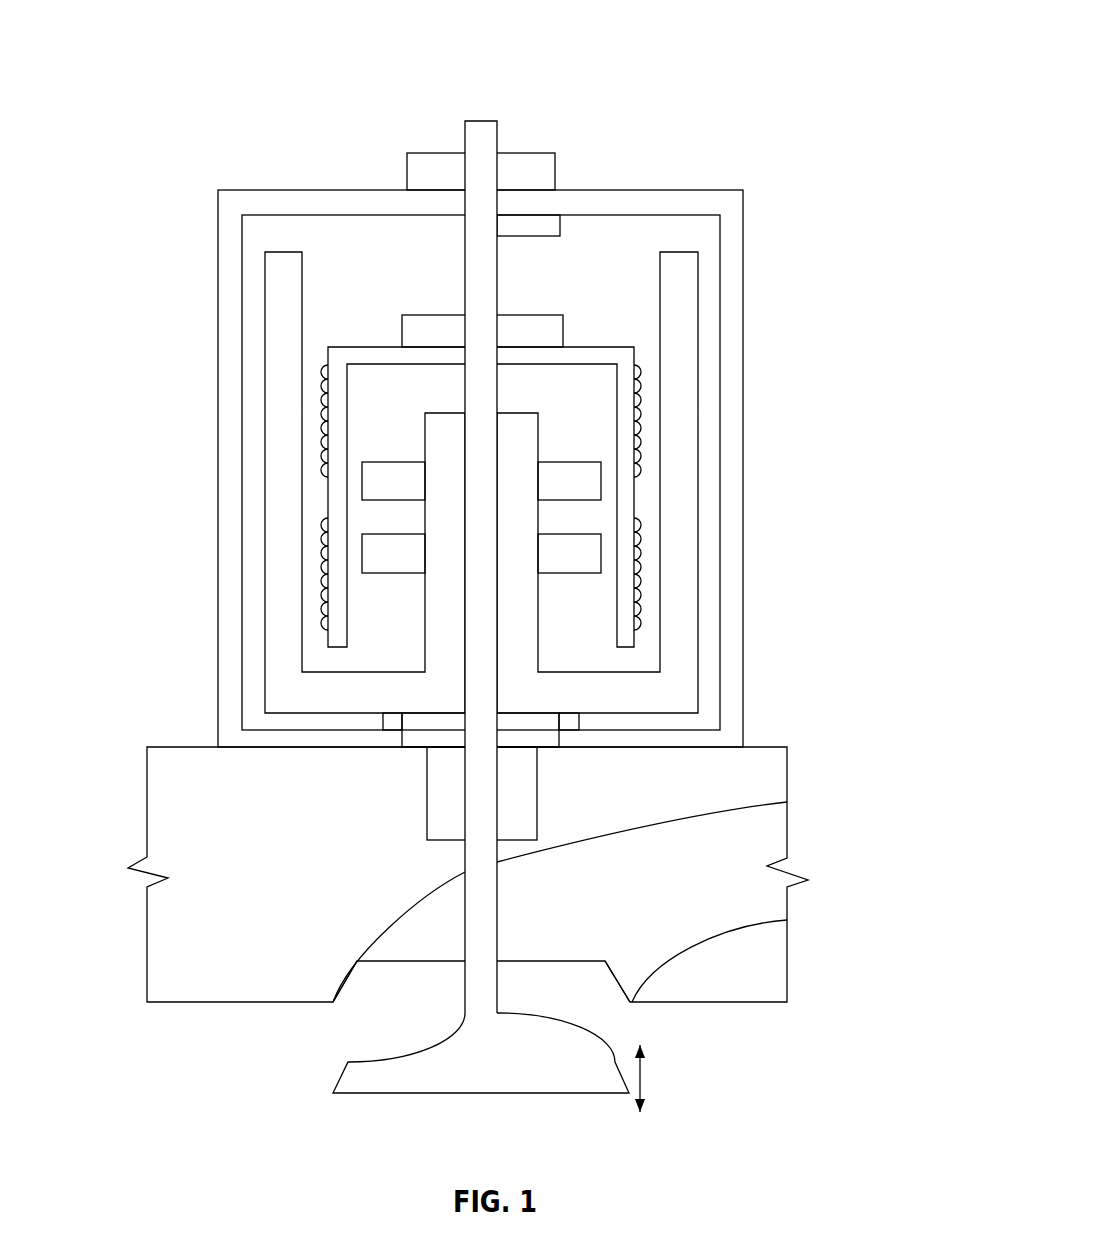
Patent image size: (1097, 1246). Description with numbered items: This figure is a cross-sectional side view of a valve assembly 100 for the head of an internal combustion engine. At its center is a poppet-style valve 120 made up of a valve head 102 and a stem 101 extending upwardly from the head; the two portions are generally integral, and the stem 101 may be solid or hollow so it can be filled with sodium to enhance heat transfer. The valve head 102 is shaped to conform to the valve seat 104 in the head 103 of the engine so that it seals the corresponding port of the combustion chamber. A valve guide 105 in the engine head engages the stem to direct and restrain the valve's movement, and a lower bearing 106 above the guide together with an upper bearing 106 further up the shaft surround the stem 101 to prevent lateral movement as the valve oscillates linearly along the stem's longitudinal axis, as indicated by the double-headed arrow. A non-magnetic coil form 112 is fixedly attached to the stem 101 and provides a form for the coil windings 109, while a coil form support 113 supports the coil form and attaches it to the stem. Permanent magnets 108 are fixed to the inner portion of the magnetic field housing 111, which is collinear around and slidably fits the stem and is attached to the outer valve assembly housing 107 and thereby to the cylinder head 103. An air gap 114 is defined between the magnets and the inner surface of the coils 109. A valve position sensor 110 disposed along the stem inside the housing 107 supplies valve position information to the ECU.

The valve assembly 100 is at (672, 52).
The stem 101 is at (498, 277).
The valve head 102 is at (528, 1040).
The head 103 is at (197, 815).
The valve seat 104 is at (346, 964).
The valve guide 105 is at (540, 797).
The bearing 106 is at (558, 168).
The valve assembly housing 107 is at (218, 212).
The permanent magnets 108 is at (577, 478).
The coil windings 109 is at (320, 447).
The valve position sensor 110 is at (565, 226).
The field housing 111 is at (700, 293).
The coil form 112 is at (320, 358).
The coil form support 113 is at (397, 325).
The air gap 114 is at (612, 513).
The valve 120 is at (489, 117).